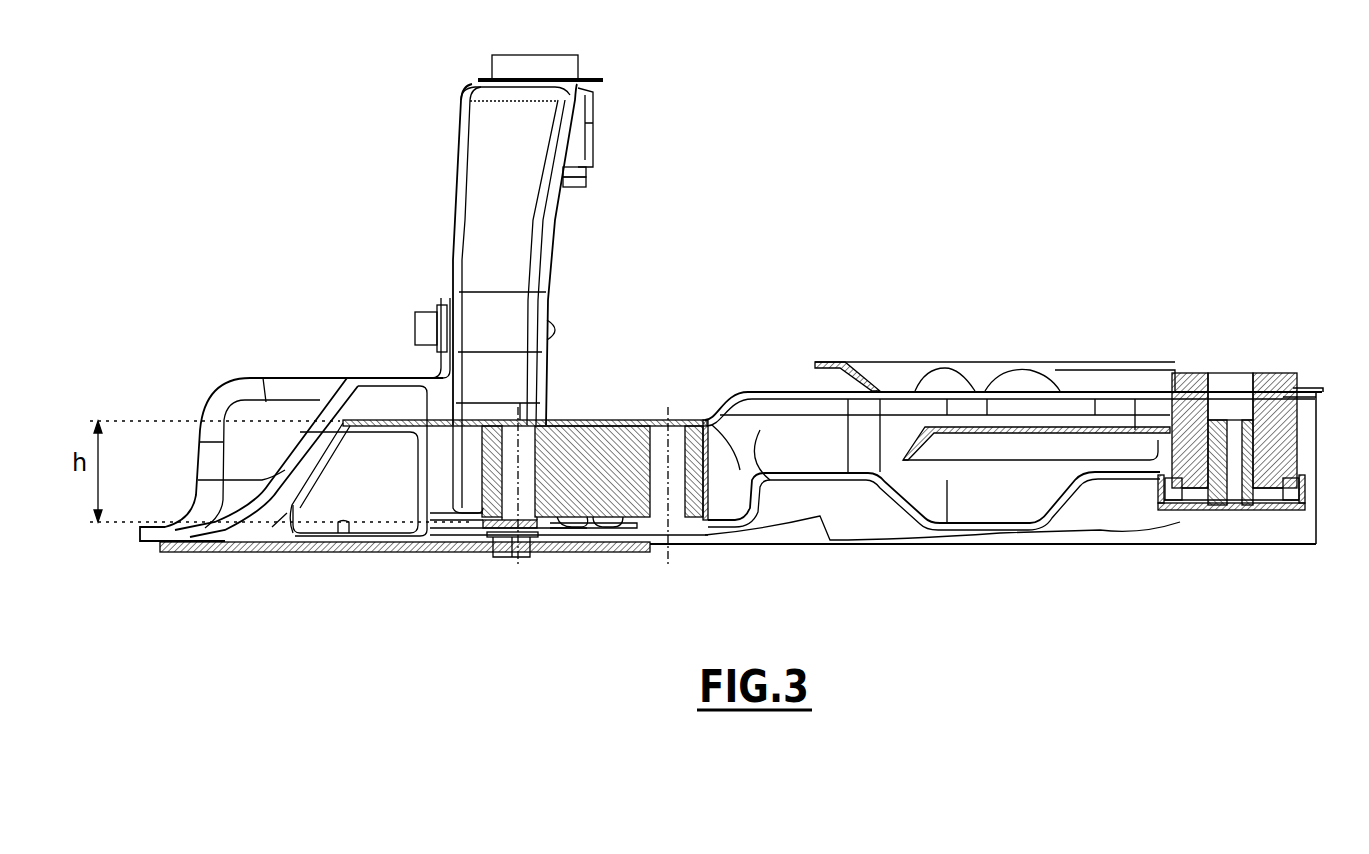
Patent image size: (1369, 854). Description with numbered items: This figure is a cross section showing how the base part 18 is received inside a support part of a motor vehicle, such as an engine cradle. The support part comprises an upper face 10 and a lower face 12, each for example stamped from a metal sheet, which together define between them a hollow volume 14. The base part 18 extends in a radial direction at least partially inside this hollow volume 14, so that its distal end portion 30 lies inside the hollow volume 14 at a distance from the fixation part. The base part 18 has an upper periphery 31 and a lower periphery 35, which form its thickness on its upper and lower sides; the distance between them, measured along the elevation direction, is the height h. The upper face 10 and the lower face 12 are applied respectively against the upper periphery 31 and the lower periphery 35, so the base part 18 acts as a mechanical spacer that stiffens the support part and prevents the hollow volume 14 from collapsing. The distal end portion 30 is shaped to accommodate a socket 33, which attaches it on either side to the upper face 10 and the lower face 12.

The upper face 10 is at (622, 420).
The lower face 12 is at (550, 538).
The hollow volume 14 is at (737, 470).
The base part 18 is at (586, 462).
The distal end portion 30 is at (470, 484).
The upper periphery 31 is at (642, 420).
The socket 33 is at (548, 420).
The lower periphery 35 is at (648, 540).